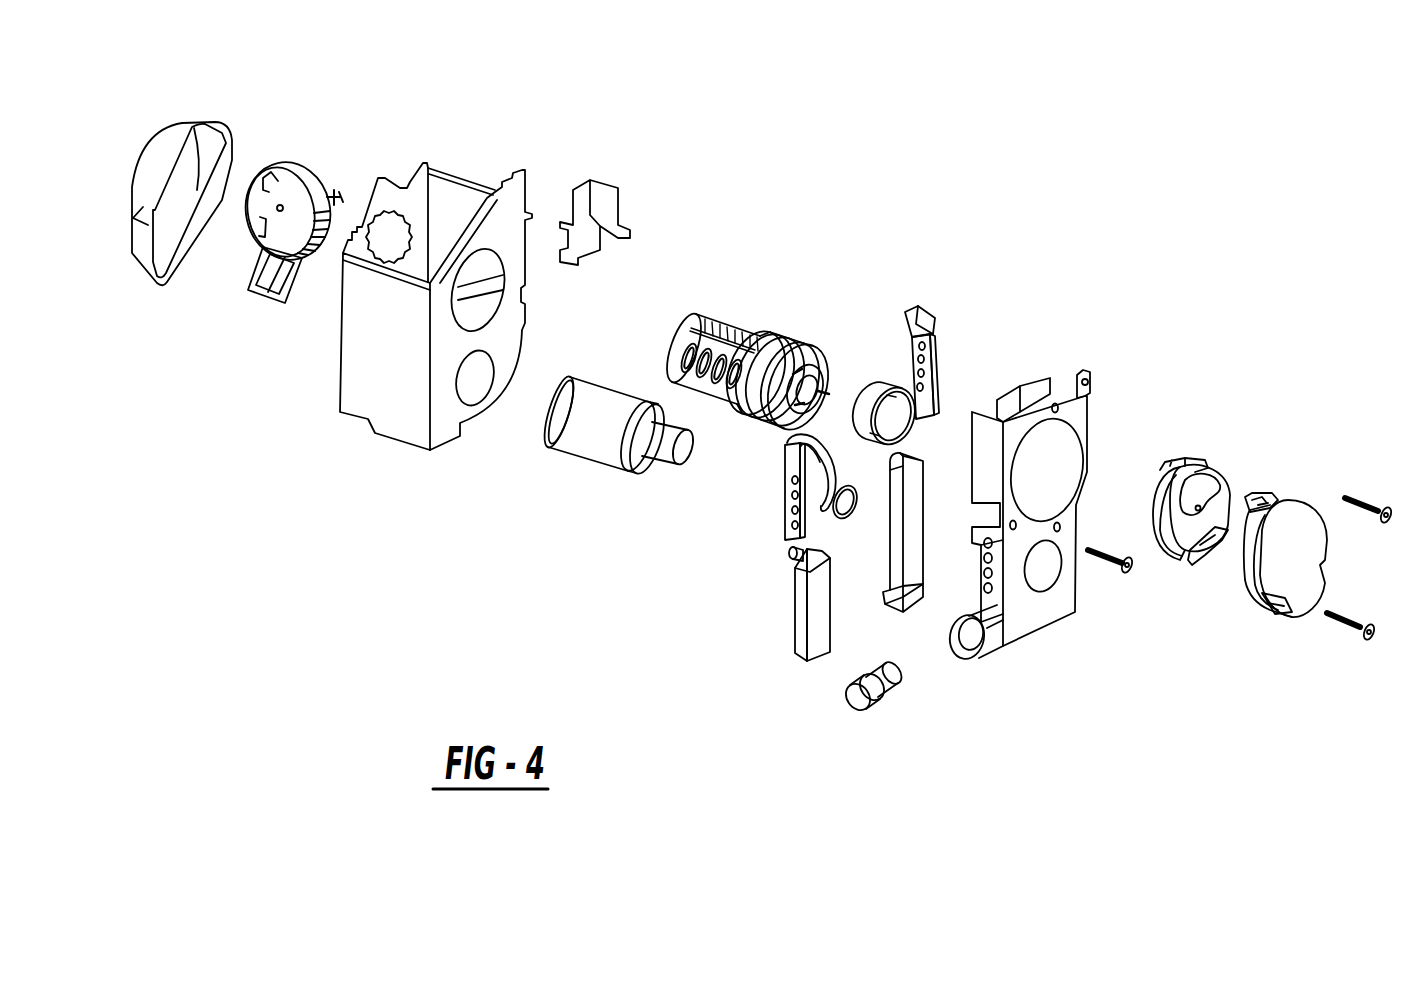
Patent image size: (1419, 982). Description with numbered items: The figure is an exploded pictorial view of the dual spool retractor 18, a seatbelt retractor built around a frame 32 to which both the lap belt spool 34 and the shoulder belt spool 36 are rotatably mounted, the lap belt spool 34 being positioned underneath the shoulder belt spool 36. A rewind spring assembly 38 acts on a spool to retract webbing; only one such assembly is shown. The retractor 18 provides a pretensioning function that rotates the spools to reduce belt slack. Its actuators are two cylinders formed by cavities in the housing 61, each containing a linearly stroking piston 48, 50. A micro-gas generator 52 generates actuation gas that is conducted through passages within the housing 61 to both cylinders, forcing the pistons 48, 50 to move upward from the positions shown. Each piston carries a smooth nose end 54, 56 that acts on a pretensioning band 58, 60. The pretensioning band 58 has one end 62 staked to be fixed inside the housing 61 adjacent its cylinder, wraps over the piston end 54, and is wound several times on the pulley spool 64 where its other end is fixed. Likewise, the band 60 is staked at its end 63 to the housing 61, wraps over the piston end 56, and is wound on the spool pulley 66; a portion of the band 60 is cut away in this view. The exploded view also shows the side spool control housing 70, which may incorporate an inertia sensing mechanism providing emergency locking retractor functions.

The dual spool retractor 18 is at (878, 170).
The frame 32 is at (505, 205).
The lap belt spool 34 is at (612, 458).
The shoulder belt spool 36 is at (765, 340).
The rewind spring assembly 38 is at (292, 170).
The piston 48 is at (802, 622).
The piston 50 is at (924, 528).
The micro-gas generator 52 is at (888, 693).
The nose end 54 is at (805, 557).
The nose end 56 is at (903, 456).
The pretensioning band 58 is at (775, 506).
The pretensioning band 60 is at (964, 329).
The housing 61 is at (1075, 412).
The end 62 is at (793, 535).
The end 63 is at (933, 343).
The pulley spool 64 is at (662, 447).
The spool pulley 66 is at (872, 393).
The side spool control housing 70 is at (1278, 497).